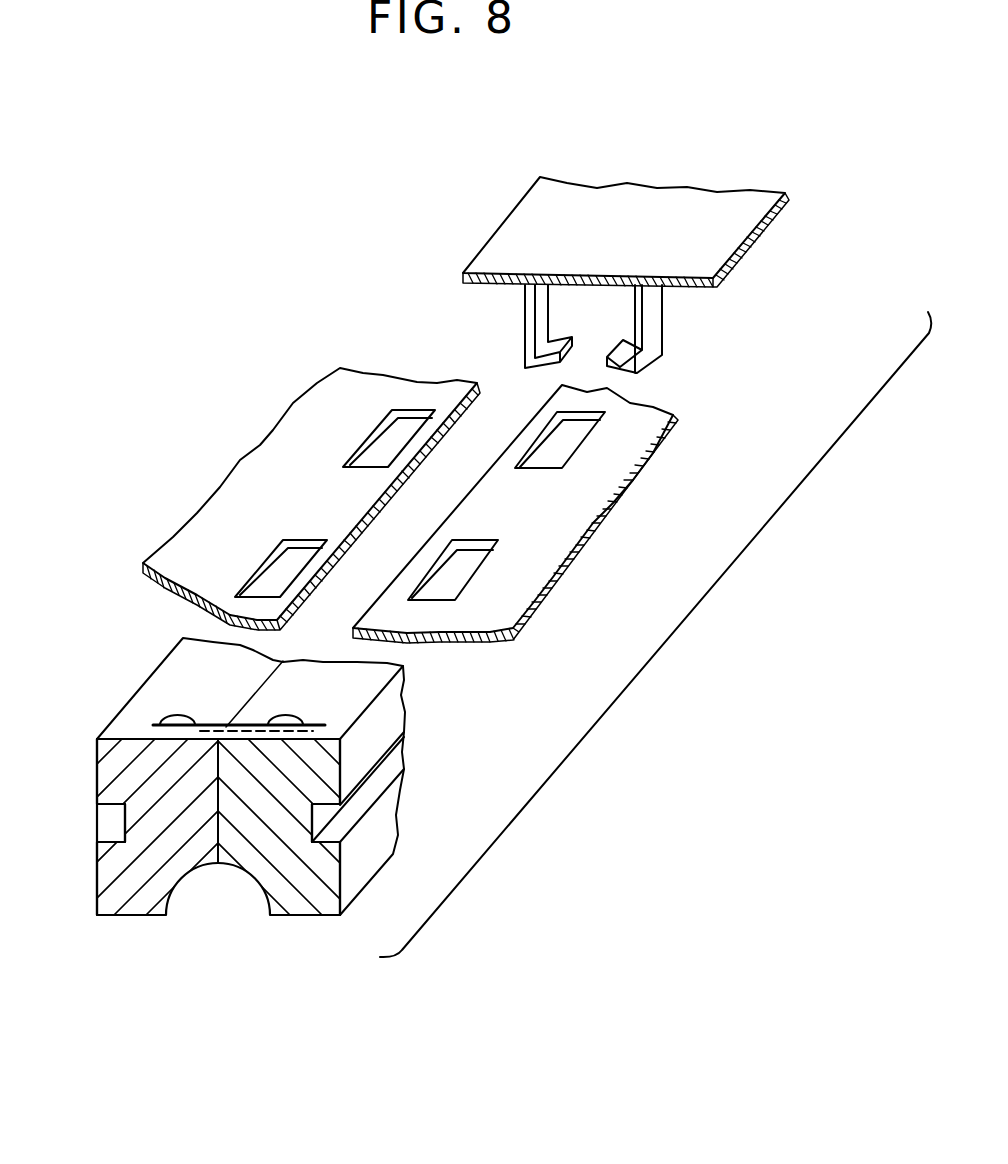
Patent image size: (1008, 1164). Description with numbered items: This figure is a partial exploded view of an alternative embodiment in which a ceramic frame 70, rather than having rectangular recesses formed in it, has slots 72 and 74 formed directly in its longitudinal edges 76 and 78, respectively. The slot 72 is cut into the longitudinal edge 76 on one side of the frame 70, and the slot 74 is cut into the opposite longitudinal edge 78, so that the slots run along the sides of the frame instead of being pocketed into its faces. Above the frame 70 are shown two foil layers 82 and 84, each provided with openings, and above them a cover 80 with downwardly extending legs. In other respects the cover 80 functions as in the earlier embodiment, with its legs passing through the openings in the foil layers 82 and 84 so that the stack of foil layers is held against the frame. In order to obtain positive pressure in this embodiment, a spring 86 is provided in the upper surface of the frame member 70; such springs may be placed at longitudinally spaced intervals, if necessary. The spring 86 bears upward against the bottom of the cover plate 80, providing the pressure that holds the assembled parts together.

The ceramic frame 70 is at (256, 765).
The slot 72 is at (97, 823).
The slot 74 is at (320, 820).
The longitudinal edge 76 is at (97, 775).
The longitudinal edge 78 is at (368, 737).
The cover 80 is at (693, 250).
The foil layer 82 is at (565, 505).
The foil layer 84 is at (318, 432).
The spring 86 is at (208, 725).